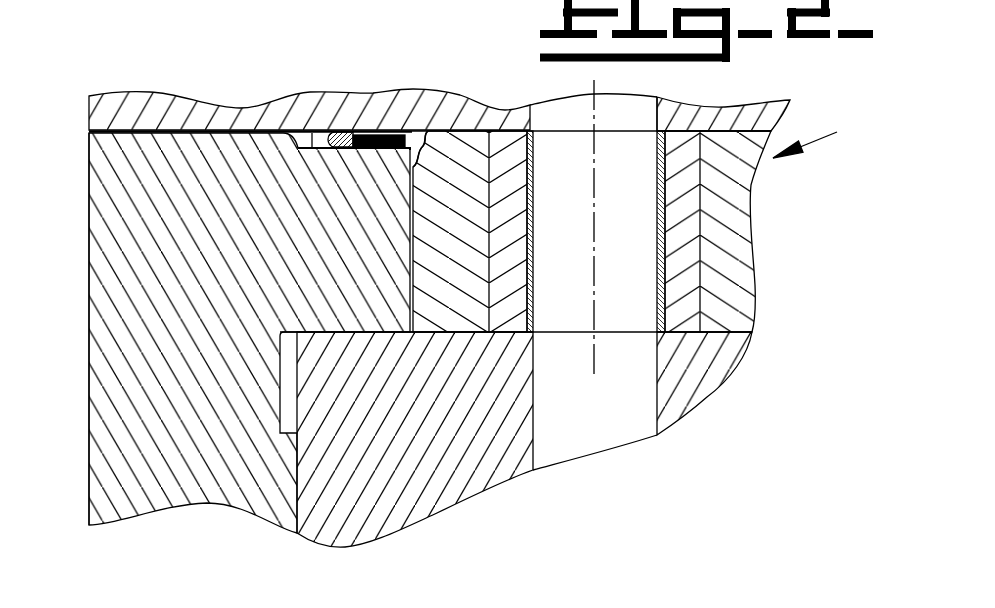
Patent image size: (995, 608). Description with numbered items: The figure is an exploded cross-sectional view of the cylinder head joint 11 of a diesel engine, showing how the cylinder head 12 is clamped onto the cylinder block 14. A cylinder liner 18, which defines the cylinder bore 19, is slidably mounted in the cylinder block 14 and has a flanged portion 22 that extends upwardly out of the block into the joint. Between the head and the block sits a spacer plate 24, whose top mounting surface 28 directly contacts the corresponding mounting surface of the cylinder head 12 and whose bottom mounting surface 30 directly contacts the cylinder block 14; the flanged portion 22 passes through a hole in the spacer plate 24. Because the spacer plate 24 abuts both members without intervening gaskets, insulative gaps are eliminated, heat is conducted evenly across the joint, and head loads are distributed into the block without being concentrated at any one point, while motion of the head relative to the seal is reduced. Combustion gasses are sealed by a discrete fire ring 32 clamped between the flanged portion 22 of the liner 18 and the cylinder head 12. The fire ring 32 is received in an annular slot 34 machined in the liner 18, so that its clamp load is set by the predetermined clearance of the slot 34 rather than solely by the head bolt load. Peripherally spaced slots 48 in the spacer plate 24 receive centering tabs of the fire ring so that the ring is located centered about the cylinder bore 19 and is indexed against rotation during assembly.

The cylinder head joint 11 is at (826, 139).
The cylinder head 12 is at (147, 93).
The cylinder block 14 is at (388, 518).
The cylinder liner 18 is at (189, 402).
The cylinder bore 19 is at (88, 318).
The flanged portion 22 is at (200, 133).
The spacer plate 24 is at (757, 270).
The top mounting surface 28 is at (463, 112).
The bottom mounting surface 30 is at (472, 332).
The fire ring 32 is at (333, 130).
The annular slot 34 is at (308, 130).
The slots 48 is at (429, 125).